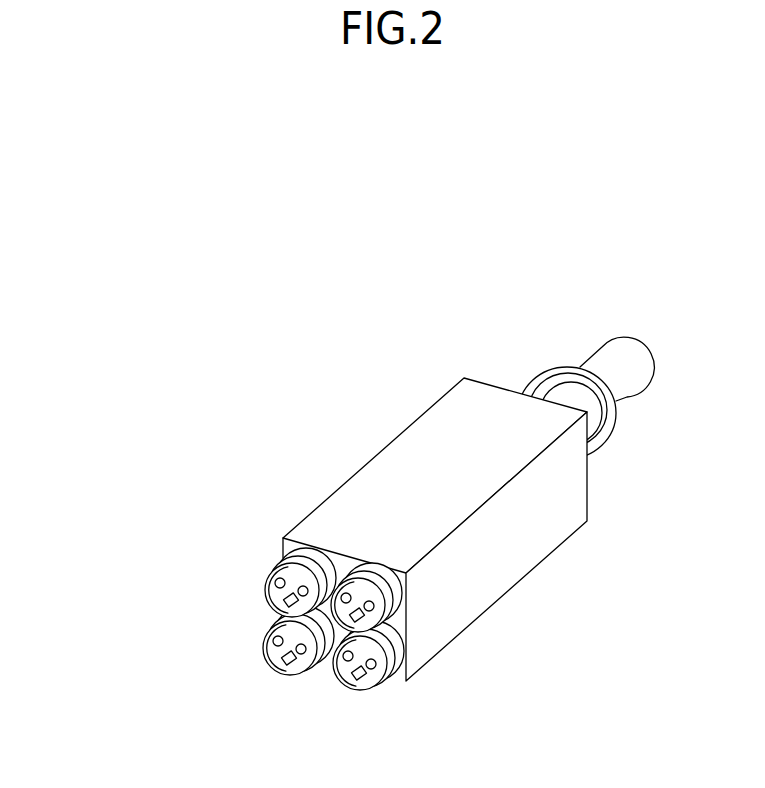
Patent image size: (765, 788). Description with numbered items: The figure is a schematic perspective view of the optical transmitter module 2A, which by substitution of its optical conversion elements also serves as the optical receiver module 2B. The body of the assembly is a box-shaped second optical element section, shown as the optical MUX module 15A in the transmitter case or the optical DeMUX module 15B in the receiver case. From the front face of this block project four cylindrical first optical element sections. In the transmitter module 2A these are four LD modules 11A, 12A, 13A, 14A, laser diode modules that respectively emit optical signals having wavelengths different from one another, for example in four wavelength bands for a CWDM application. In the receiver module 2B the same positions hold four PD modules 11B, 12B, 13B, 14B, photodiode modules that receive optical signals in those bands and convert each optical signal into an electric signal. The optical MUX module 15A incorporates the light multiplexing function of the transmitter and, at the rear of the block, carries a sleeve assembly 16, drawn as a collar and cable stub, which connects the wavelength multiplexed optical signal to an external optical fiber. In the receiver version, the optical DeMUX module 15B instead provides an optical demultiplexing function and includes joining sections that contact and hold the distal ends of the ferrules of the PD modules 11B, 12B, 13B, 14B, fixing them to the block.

The optical transmitter module 2A is at (355, 453).
The optical receiver module 2B is at (430, 165).
The optical MUX module 15A is at (435, 495).
The optical DeMUX module 15B is at (393, 400).
The sleeve assembly 16 is at (560, 365).
The LD module 11A is at (468, 618).
The PD module 11B is at (375, 613).
The LD module 12A is at (466, 681).
The PD module 12B is at (373, 675).
The LD module 13A is at (205, 640).
The PD module 13B is at (263, 643).
The LD module 14A is at (208, 537).
The PD module 14B is at (263, 572).